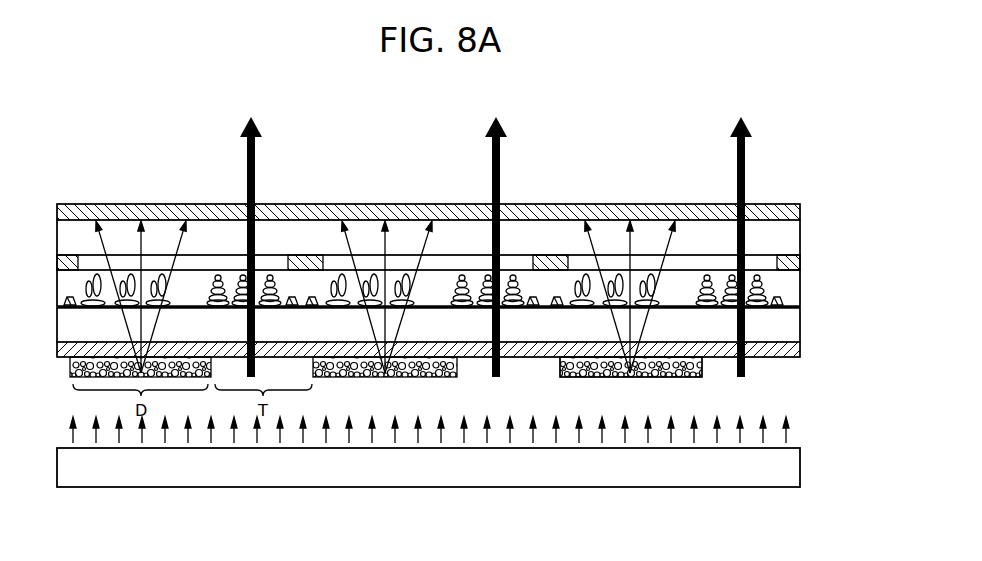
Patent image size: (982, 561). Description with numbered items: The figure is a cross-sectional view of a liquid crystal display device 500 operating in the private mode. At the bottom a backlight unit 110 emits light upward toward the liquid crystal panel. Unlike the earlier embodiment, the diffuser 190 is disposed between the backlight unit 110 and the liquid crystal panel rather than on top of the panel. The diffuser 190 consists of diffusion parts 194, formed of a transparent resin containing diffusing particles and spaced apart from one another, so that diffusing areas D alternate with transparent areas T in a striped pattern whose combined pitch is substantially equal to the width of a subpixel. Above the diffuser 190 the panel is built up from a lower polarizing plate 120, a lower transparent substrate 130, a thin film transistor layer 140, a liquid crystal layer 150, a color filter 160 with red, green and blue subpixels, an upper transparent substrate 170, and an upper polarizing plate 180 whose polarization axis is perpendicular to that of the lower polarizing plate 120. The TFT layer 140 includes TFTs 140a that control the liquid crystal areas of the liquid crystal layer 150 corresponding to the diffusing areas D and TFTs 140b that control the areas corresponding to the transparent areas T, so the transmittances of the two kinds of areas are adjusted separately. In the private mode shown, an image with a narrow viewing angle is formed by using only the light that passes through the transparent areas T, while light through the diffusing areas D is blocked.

The backlight unit 110 is at (800, 467).
The lower polarizing plate 120 is at (800, 348).
The lower transparent substrate 130 is at (800, 328).
The thin film transistor (TFT) layer 140 is at (800, 303).
The TFTs 140a is at (74, 298).
The TFTs 140b is at (294, 298).
The liquid crystal layer 150 is at (800, 285).
The color filter 160 is at (800, 263).
The upper transparent substrate 170 is at (800, 240).
The upper polarizing plate 180 is at (800, 210).
The diffuser 190 is at (716, 377).
The diffusion parts 194 is at (562, 378).
The liquid crystal display device 500 is at (806, 162).